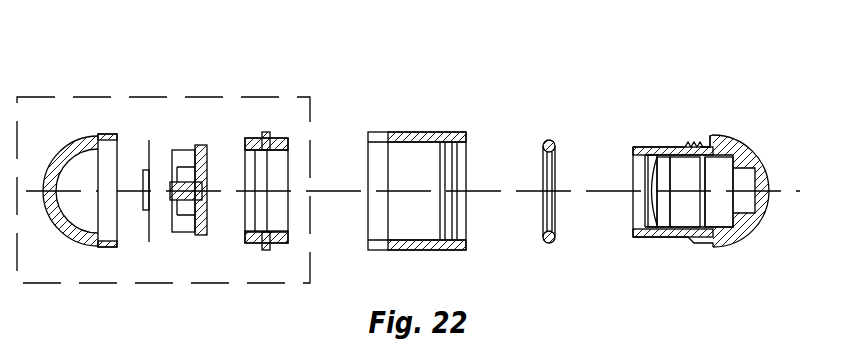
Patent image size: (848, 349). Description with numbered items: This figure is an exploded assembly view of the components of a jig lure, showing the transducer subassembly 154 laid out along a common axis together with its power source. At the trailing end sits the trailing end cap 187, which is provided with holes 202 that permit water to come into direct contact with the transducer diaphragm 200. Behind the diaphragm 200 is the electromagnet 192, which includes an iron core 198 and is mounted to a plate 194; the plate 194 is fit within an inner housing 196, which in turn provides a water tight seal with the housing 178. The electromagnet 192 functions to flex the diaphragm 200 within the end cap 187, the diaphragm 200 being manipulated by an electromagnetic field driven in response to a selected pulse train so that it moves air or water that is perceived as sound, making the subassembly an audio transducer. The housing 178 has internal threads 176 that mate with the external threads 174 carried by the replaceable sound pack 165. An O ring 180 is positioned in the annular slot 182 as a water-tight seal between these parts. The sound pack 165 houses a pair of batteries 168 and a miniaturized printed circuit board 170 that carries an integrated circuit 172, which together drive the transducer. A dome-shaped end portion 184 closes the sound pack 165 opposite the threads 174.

The transducer subassembly 154 is at (204, 96).
The holes 202 is at (60, 152).
The trailing end cap 187 is at (52, 225).
The inner housing 196 is at (110, 148).
The transducer diaphragm 200 is at (148, 238).
The electromagnet 192 is at (183, 234).
The plate 194 is at (203, 235).
The iron core 198 is at (170, 183).
The housing 178 is at (413, 123).
The internal threads 176 is at (449, 141).
The O ring 180 is at (549, 140).
The sound pack 165 is at (672, 238).
The external threads 174 is at (697, 243).
The annular slot 182 is at (710, 138).
The dome cap 184 is at (773, 203).
The miniaturized printed circuit board 170 is at (658, 168).
The integrated circuit 172 is at (665, 223).
The batteries 168 is at (684, 166).